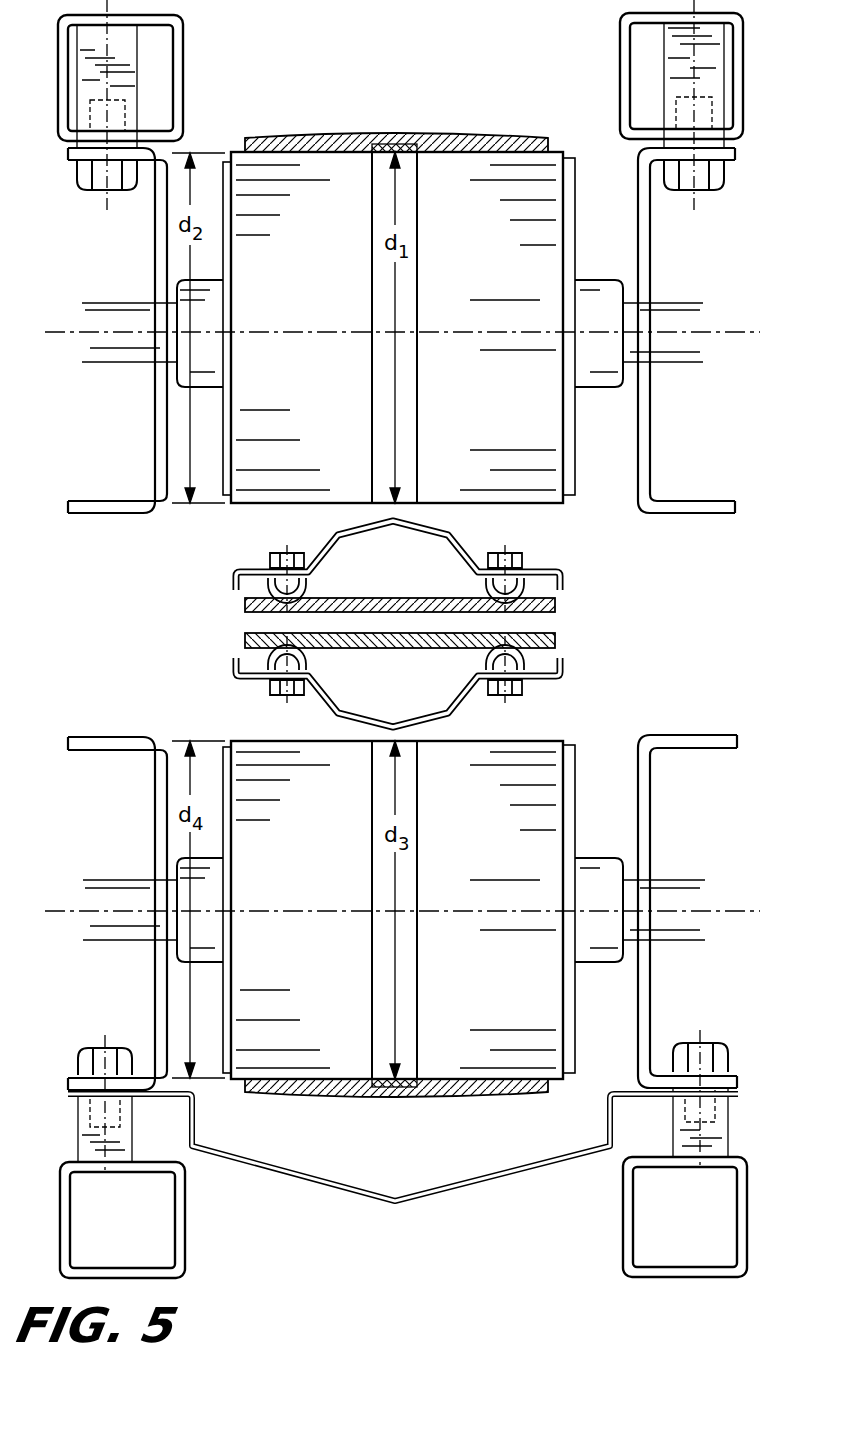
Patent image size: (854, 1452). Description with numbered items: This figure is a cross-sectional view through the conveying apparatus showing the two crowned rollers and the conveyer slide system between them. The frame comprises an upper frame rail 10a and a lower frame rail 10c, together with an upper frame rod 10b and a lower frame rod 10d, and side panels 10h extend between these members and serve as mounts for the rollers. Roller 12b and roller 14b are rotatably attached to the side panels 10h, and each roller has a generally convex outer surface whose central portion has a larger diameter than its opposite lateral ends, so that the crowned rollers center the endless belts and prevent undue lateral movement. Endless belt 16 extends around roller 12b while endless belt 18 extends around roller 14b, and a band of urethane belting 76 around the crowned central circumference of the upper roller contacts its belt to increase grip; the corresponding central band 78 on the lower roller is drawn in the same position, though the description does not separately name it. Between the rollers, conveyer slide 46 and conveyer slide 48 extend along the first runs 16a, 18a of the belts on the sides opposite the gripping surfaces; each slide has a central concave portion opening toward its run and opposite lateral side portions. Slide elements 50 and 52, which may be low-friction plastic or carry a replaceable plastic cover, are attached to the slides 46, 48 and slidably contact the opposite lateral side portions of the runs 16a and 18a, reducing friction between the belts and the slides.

The upper frame rail 10a is at (183, 50).
The upper frame rod 10b is at (620, 42).
The lower frame rail 10c is at (178, 1232).
The lower frame rod 10d is at (628, 1213).
The side panels 10h is at (155, 246).
The roller 12b is at (498, 137).
The roller 14b is at (490, 1082).
The endless belt 16 is at (310, 140).
The endless belt 18 is at (283, 1096).
The first run 16a is at (558, 600).
The first run 18a is at (558, 640).
The conveyer slide 46 is at (466, 540).
The conveyer slide 48 is at (470, 703).
The slide element 50 is at (272, 588).
The slide element 52 is at (275, 665).
The band of urethane belting 76 is at (415, 142).
The lower roller center groove 78 is at (410, 1092).